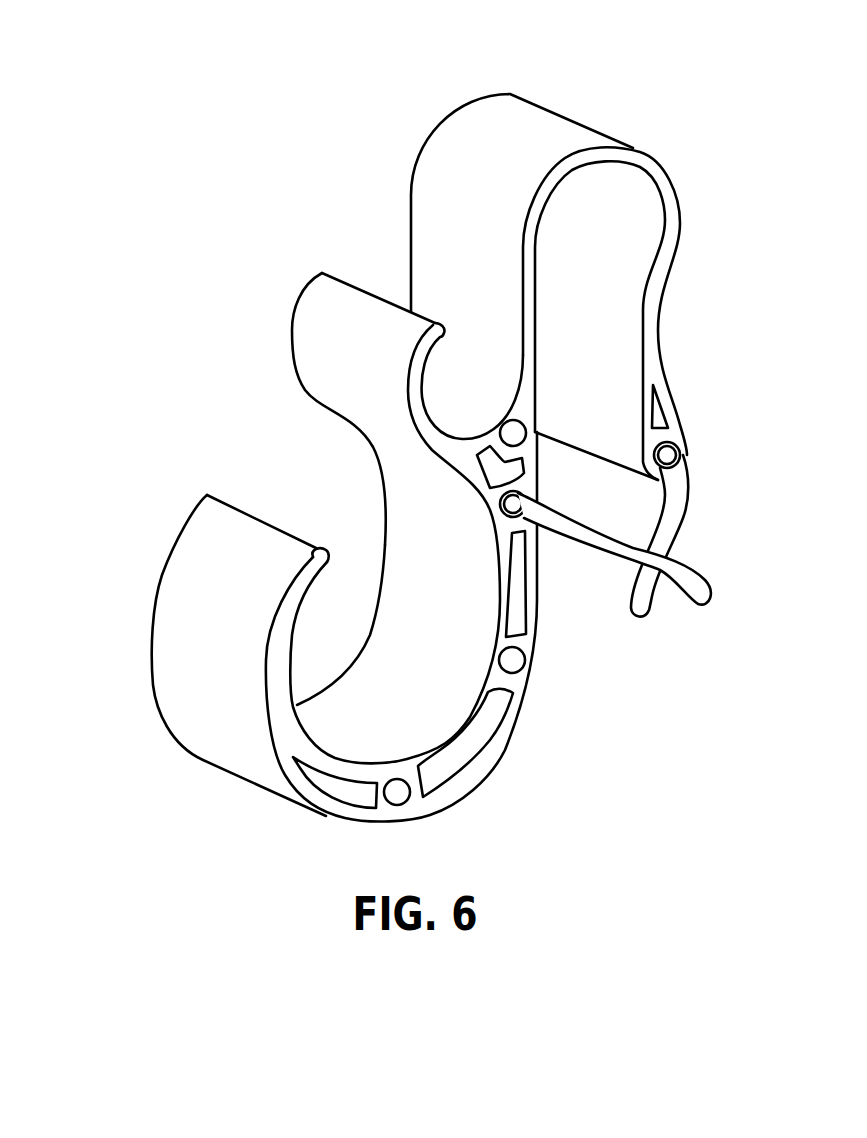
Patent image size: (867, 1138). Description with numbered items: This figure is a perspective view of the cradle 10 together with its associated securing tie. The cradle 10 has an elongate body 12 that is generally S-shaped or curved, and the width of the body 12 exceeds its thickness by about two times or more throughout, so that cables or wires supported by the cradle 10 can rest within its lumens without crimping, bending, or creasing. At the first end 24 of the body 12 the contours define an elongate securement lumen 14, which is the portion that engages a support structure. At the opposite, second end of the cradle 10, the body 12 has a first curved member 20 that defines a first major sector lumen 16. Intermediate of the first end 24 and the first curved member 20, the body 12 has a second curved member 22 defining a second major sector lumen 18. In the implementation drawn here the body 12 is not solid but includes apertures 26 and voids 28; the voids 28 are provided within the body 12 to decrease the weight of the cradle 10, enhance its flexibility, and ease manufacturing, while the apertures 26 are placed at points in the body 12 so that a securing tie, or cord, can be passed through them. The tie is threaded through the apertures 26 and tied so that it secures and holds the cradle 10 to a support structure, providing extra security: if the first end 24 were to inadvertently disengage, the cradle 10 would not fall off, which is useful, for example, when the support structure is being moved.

The cradle 10 is at (659, 60).
The elongate body 12 is at (540, 637).
The elongate securement lumen 14 is at (580, 490).
The first major sector lumen 16 is at (318, 484).
The second major sector lumen 18 is at (361, 243).
The first curved member 20 is at (78, 659).
The second curved member 22 is at (240, 339).
The first end 24 is at (735, 251).
The aperture 26 is at (719, 451).
The void 28 is at (511, 733).